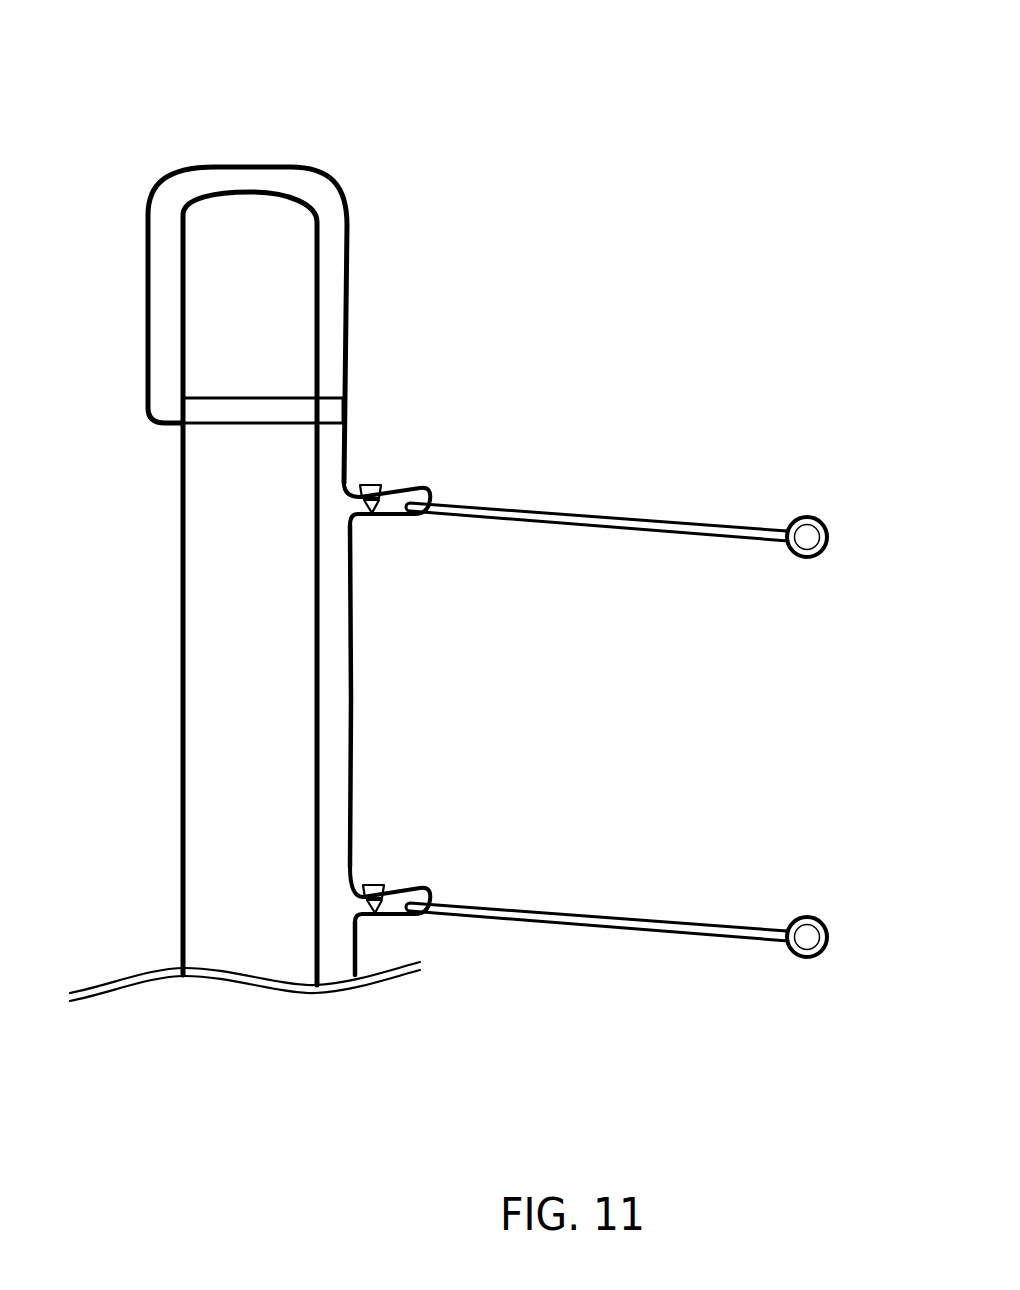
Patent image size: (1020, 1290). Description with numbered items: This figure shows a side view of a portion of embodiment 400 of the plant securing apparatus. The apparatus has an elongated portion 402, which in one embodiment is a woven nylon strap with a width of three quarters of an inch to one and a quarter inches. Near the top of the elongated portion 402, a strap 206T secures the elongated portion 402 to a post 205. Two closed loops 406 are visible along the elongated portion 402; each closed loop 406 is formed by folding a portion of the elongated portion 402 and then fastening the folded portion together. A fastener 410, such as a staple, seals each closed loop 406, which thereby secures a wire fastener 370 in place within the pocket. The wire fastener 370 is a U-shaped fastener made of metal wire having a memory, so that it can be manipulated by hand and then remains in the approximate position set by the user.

The embodiment 400 is at (578, 85).
The post 205 is at (250, 567).
The strap 206T is at (267, 412).
The elongated portion 402 is at (352, 718).
The closed loop 406 is at (420, 490).
The fastener 410 is at (372, 485).
The wire fastener 370 is at (620, 512).